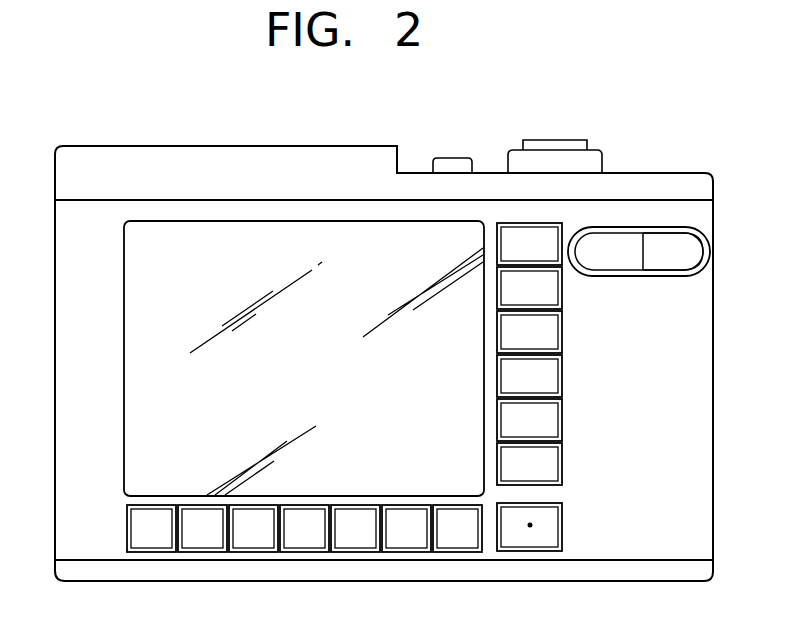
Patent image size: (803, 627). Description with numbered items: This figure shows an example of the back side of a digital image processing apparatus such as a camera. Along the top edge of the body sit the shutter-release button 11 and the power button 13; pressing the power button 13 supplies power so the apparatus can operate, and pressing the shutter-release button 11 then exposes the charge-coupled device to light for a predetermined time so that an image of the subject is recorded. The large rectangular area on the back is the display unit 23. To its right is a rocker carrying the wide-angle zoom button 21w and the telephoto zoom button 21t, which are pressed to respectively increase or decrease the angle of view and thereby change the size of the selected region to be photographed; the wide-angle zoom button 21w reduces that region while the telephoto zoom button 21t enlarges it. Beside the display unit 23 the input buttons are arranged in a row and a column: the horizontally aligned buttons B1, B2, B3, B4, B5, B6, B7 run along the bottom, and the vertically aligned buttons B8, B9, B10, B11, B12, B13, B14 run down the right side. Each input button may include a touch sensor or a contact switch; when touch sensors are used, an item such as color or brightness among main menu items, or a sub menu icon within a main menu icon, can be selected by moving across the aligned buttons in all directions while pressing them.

The shutter-release button 11 is at (556, 147).
The power button 13 is at (452, 162).
The display unit 23 is at (199, 237).
The wide-angle zoom button 21w is at (639, 251).
The telephoto zoom button 21t is at (673, 251).
The input button B1 is at (151, 528).
The input button B2 is at (202, 528).
The input button B3 is at (253, 528).
The input button B4 is at (304, 528).
The input button B5 is at (355, 528).
The input button B6 is at (406, 528).
The input button B7 is at (457, 528).
The input button B8 is at (529, 244).
The input button B9 is at (529, 288).
The input button B10 is at (529, 332).
The input button B11 is at (529, 376).
The input button B12 is at (529, 420).
The input button B13 is at (529, 464).
The input button B14 is at (562, 525).